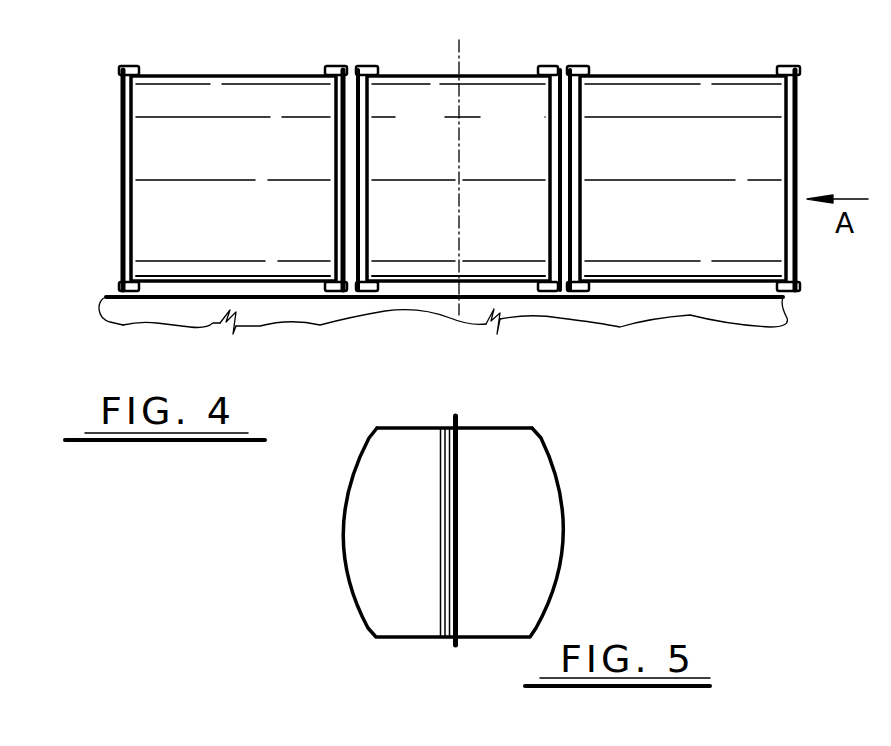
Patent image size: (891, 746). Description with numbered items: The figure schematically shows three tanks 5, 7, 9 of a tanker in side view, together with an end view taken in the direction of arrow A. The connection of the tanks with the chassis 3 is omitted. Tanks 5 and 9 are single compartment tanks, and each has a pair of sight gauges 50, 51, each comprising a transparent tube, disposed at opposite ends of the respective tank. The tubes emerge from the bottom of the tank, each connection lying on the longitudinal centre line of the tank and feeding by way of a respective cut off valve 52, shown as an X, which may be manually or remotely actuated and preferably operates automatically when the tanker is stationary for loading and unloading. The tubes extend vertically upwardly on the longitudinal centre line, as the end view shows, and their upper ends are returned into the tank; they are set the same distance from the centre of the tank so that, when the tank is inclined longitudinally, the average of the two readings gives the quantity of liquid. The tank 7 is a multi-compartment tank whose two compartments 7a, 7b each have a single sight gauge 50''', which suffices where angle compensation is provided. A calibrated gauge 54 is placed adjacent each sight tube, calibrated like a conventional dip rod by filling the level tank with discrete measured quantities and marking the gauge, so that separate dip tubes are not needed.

In FIG. 4, the chassis 3 is at (630, 308).
In FIG. 4, the tank 5 is at (240, 228).
In FIG. 4, the tank 7 is at (458, 177).
In FIG. 4, the compartment 7a is at (438, 143).
In FIG. 4, the compartment 7b is at (530, 143).
In FIG. 4, the tank 9 is at (685, 228).
In FIG. 4, the sight gauge 50 is at (362, 163).
In FIG. 4, the single sight gauge 50''' is at (492, 157).
In FIG. 4, the sight gauge 51 is at (335, 116).
In FIG. 5, the sight gauge 51 is at (458, 482).
In FIG. 4, the cut off valve 52 is at (128, 291).
In FIG. 5, the cut off valve 52 is at (449, 643).
In FIG. 5, the calibrated gauge 54 is at (437, 475).